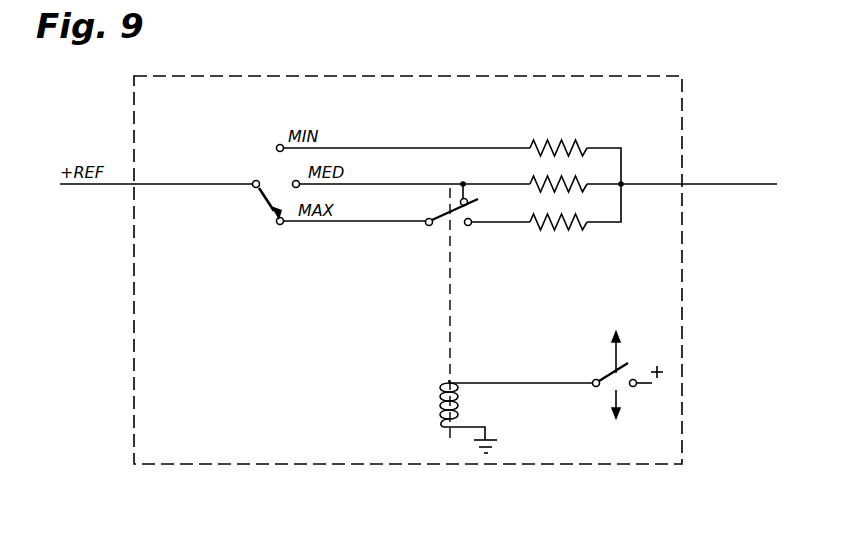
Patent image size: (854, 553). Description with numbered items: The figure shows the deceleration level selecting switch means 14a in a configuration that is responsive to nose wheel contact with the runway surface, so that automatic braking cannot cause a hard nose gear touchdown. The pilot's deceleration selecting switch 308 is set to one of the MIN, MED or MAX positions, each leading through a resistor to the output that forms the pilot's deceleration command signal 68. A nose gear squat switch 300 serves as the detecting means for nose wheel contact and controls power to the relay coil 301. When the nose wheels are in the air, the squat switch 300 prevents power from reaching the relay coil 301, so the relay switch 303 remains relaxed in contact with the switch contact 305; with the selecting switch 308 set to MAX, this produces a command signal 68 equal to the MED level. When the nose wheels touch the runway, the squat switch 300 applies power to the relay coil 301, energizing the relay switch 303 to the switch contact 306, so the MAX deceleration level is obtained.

The deceleration level selecting switch means 14a is at (374, 76).
The pilot's deceleration command signal 68 is at (716, 184).
The pilot's deceleration selecting switch 308 is at (254, 196).
The relay switch 303 is at (435, 226).
The switch contact 305 is at (468, 203).
The switch contact 306 is at (470, 226).
The relay coil 301 is at (440, 397).
The nose gear squat switch 300 is at (604, 373).